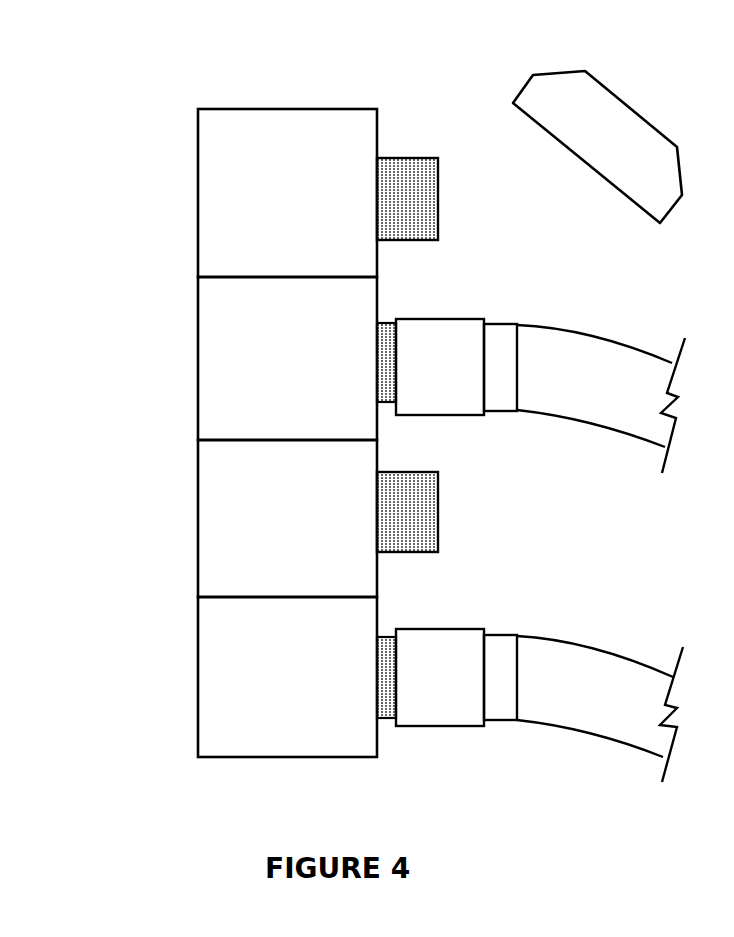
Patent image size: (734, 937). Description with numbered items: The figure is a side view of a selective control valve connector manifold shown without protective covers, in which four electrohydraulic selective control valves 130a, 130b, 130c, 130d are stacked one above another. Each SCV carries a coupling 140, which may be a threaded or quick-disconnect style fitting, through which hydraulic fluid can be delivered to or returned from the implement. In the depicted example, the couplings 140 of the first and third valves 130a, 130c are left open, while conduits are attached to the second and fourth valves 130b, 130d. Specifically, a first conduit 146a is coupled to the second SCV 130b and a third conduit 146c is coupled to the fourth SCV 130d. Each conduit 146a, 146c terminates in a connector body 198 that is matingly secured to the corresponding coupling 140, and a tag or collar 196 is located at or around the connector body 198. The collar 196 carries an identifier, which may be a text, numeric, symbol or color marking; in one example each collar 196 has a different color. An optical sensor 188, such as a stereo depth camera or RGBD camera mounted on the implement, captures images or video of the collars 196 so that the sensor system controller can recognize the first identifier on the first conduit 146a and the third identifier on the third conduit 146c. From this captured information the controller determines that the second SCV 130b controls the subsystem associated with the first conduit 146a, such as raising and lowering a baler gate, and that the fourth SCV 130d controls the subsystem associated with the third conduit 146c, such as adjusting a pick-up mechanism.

The selective control valve 130a is at (198, 218).
The second selective control valve 130b is at (198, 367).
The third selective control valve 130c is at (198, 515).
The fourth selective control valve 130d is at (198, 680).
The coupling 140 is at (404, 157).
The first conduit 146a is at (586, 338).
The third conduit 146c is at (588, 648).
The optical sensor 188 is at (624, 147).
The collar 196 is at (504, 323).
The connector body 198 is at (456, 416).